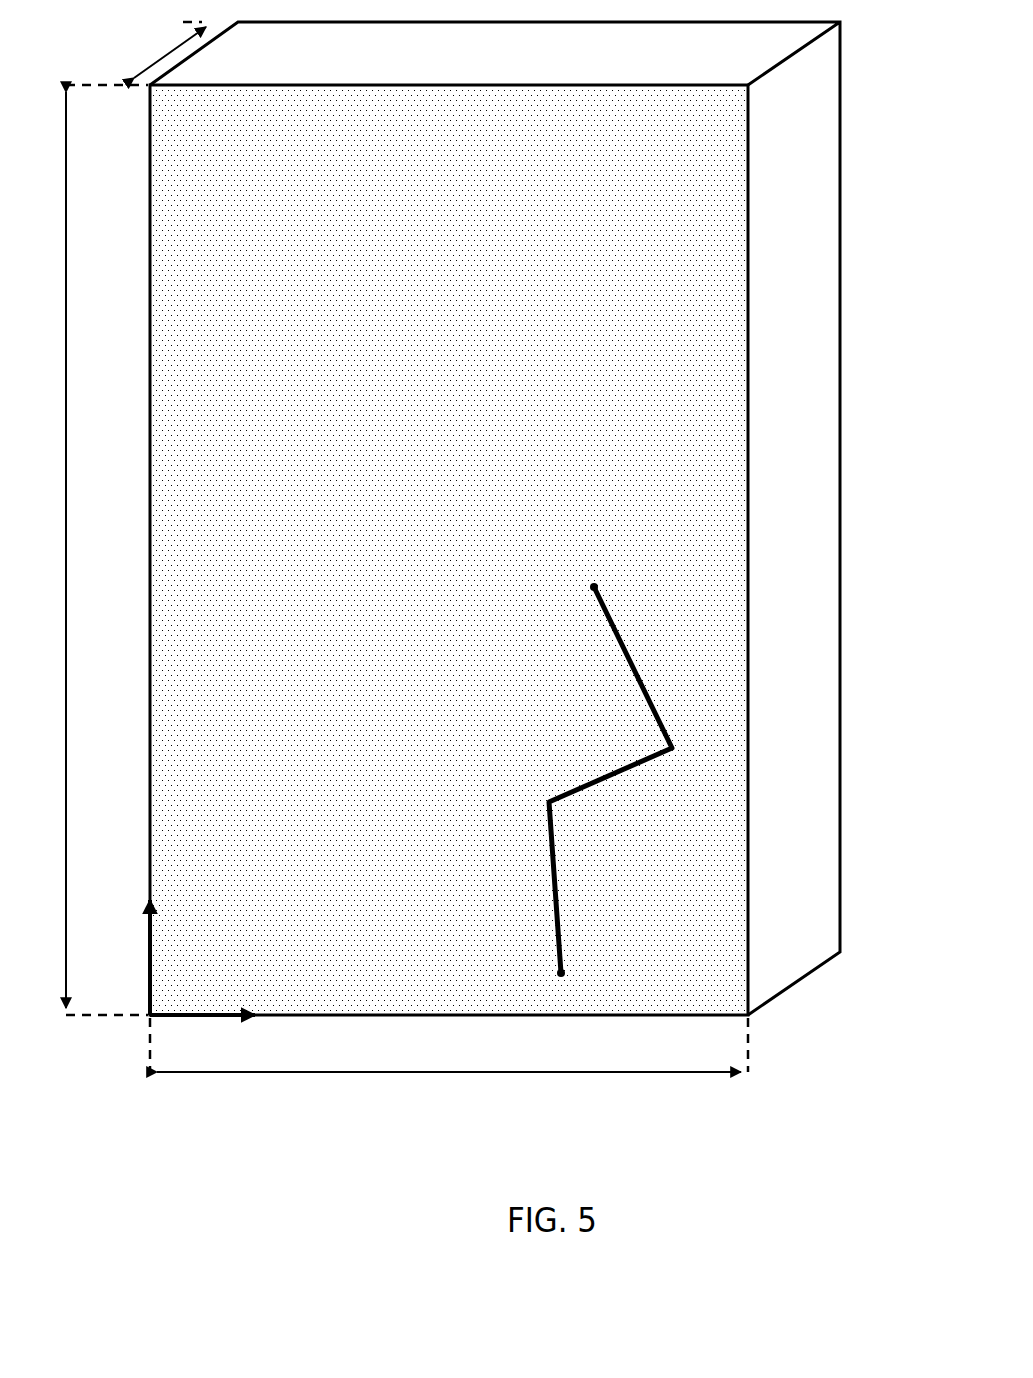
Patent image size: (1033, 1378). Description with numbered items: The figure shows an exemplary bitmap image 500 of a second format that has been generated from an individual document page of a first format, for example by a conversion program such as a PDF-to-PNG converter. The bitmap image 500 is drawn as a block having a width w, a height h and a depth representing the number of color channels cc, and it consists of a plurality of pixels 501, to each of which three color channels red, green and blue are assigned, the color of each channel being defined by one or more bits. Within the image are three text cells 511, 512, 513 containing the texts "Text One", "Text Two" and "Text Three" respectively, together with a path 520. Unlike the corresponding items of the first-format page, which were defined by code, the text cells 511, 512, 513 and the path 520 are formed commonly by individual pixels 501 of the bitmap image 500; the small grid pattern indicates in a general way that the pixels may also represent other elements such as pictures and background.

The bitmap image 500 is at (434, 593).
The pixels 501 is at (725, 818).
The text cell 511 is at (398, 240).
The text cell 512 is at (547, 402).
The text cell 513 is at (365, 553).
The path 520 is at (720, 561).